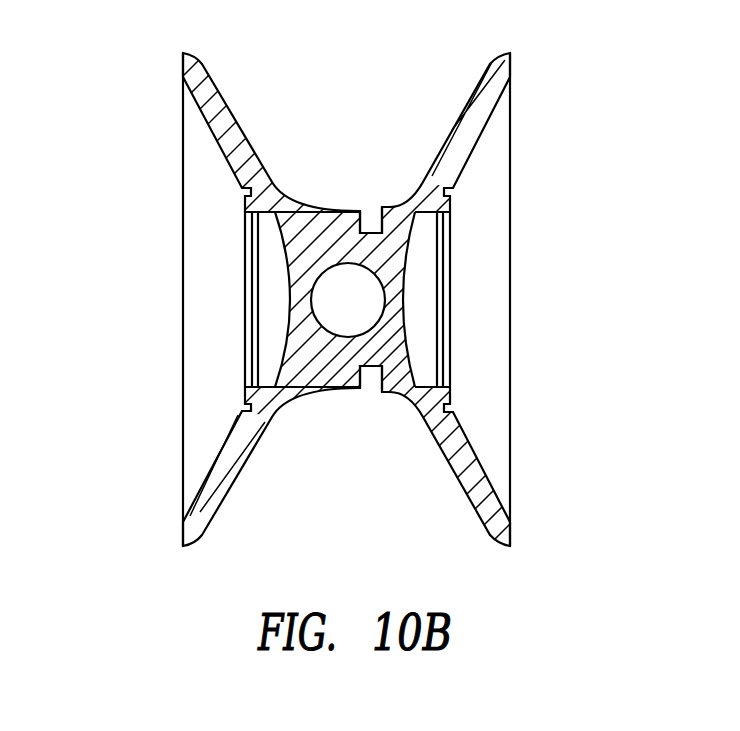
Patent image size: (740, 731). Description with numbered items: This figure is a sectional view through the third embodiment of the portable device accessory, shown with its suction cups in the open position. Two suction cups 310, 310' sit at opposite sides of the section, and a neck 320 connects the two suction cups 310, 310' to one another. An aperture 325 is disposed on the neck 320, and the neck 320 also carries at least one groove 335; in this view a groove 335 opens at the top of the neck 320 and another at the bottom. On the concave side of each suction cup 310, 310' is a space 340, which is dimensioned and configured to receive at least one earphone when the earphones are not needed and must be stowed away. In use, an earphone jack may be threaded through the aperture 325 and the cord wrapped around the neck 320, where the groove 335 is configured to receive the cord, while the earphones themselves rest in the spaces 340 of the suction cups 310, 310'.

The suction cup 310 is at (131, 299).
The suction cup 310' is at (549, 299).
The neck 320 is at (323, 404).
The aperture 325 is at (313, 276).
The groove 335 is at (371, 217).
The space 340 is at (257, 280).